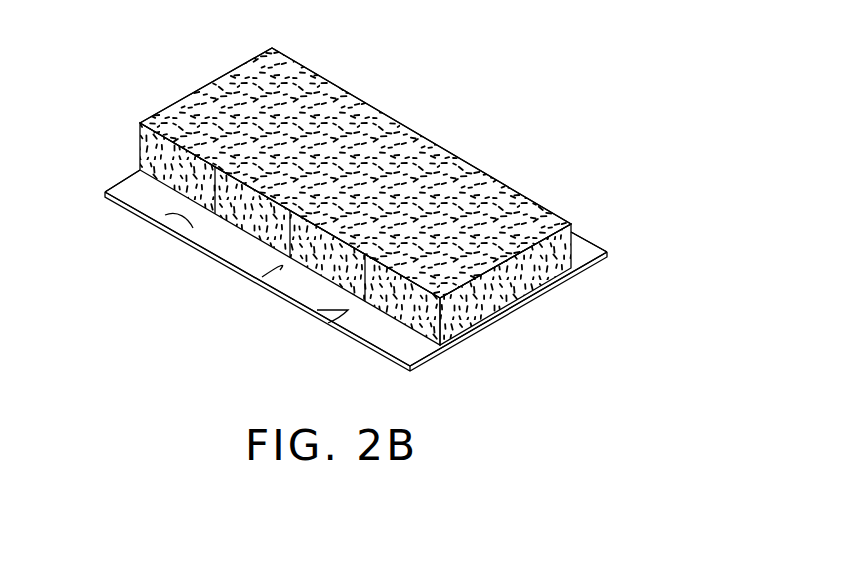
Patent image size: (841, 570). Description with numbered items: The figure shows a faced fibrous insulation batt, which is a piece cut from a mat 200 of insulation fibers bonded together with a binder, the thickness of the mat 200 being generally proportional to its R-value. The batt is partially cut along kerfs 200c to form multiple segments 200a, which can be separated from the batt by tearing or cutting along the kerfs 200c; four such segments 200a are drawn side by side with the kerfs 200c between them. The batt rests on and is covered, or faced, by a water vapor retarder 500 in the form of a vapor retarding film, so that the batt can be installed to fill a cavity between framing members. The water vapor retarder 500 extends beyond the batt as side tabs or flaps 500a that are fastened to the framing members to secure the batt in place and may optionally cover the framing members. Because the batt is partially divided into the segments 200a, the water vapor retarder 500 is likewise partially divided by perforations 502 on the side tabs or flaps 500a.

The mat 200 is at (201, 78).
The segments 200a is at (290, 72).
The kerfs 200c is at (357, 98).
The water vapor retarder 500 is at (535, 307).
The side tabs or flaps 500a is at (598, 244).
The perforations 502 is at (165, 215).